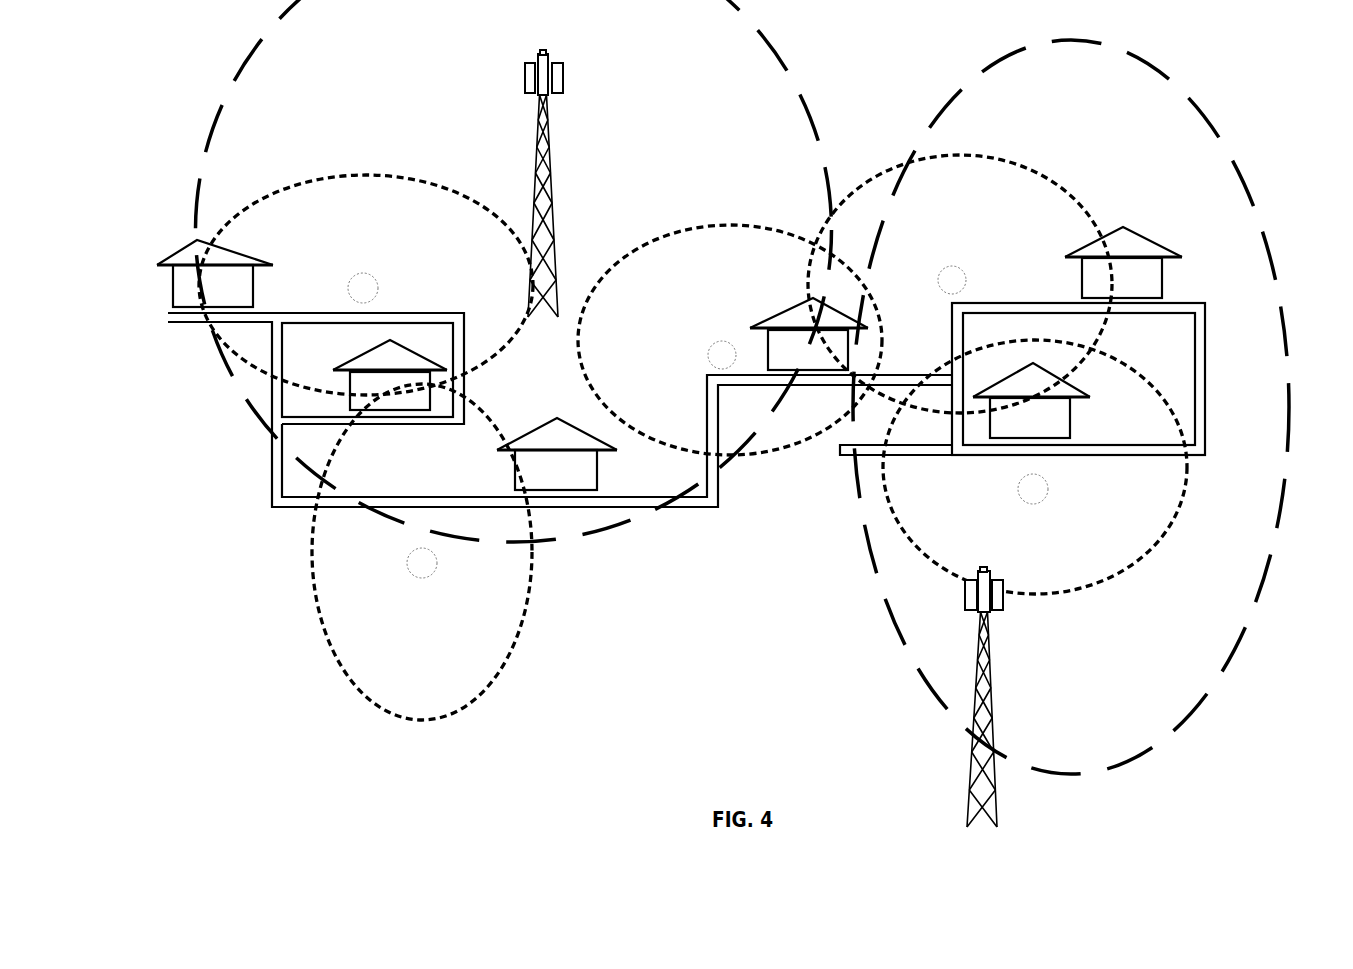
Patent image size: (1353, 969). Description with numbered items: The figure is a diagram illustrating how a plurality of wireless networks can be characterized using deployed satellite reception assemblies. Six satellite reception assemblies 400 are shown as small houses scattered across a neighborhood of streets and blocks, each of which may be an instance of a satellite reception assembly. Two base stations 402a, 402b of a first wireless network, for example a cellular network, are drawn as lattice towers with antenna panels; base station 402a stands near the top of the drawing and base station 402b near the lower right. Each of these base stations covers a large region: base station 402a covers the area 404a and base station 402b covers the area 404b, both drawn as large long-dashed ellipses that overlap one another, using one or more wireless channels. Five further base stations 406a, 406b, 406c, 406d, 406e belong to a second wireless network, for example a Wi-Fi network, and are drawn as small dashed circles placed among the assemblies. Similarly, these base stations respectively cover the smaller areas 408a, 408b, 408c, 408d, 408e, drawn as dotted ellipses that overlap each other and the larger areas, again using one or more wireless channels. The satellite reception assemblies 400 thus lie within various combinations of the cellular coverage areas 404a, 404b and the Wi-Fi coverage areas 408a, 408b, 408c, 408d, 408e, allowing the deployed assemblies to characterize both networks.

The satellite reception assembly 400 is at (669, 356).
The base station 402a is at (563, 70).
The base station 402b is at (965, 594).
The area 404a is at (797, 100).
The area 404b is at (883, 596).
The base station 406a is at (368, 275).
The base station 406b is at (421, 578).
The base station 406c is at (724, 341).
The base station 406d is at (970, 262).
The base station 406e is at (1048, 488).
The area 408a is at (381, 176).
The area 408b is at (481, 706).
The area 408c is at (747, 228).
The area 408d is at (969, 160).
The area 408e is at (1176, 512).